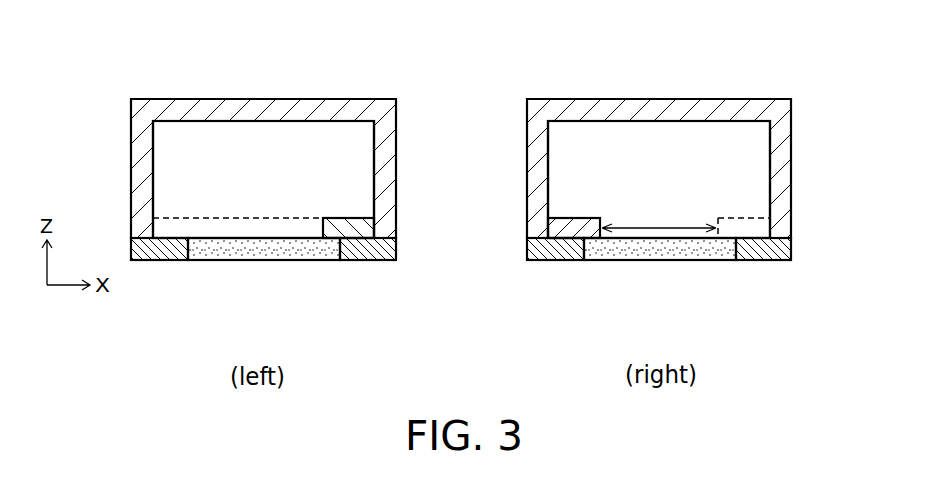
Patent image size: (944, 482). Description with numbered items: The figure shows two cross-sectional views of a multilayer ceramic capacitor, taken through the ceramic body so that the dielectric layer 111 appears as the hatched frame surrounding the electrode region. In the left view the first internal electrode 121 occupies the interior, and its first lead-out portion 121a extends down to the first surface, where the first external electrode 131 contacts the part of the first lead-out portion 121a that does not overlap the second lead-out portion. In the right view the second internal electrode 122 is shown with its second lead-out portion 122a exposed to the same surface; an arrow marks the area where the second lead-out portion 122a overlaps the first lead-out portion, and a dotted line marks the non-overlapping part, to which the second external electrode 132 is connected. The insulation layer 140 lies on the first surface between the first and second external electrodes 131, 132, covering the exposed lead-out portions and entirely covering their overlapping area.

The dielectric layer 111 is at (325, 105).
The first internal electrode 121 is at (363, 160).
The second internal electrode 122 is at (758, 158).
The first lead-out portion 121a is at (285, 233).
The second lead-out portion 122a is at (692, 232).
The first external electrode 131 is at (155, 258).
The second external electrode 132 is at (370, 258).
The insulation layer 140 is at (223, 258).